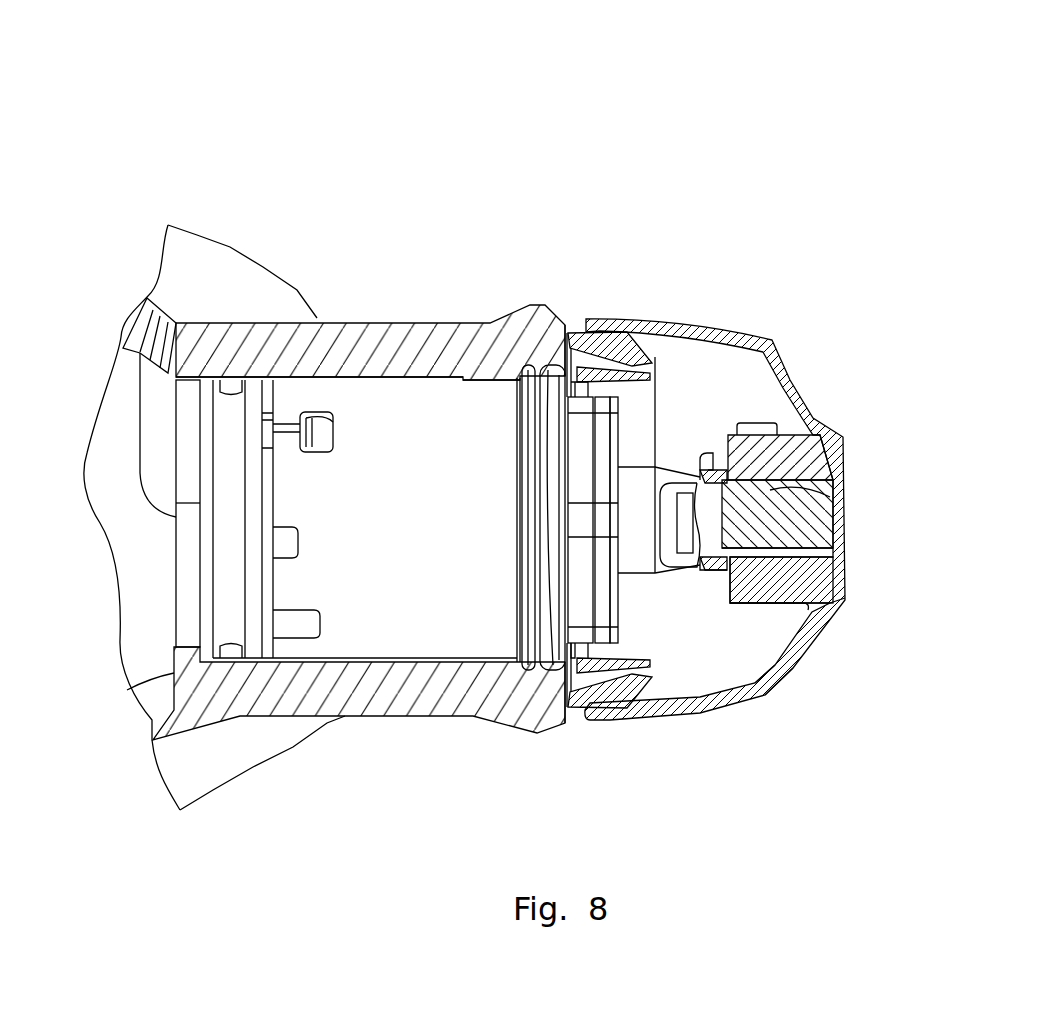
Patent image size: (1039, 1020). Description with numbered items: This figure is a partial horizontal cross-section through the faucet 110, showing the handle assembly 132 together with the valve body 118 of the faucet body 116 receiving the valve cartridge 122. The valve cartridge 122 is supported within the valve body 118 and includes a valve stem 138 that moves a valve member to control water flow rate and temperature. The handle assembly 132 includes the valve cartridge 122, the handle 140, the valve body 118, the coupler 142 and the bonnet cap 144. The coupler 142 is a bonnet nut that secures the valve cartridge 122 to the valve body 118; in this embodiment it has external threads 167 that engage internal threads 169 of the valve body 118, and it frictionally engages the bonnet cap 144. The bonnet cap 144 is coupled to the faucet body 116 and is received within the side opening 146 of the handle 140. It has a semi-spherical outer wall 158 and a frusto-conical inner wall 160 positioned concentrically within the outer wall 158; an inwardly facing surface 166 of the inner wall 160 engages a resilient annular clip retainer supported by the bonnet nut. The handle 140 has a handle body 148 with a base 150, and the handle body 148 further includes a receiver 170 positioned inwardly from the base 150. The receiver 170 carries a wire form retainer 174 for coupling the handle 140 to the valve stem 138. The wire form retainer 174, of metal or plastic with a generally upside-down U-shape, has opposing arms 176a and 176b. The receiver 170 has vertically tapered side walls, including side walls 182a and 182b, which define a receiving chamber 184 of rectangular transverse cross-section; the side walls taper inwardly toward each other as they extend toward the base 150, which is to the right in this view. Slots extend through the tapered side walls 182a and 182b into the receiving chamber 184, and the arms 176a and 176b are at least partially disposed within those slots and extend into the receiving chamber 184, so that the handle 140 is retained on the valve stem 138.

The faucet 110 is at (379, 137).
The faucet body 116 is at (360, 312).
The valve body 118 is at (437, 716).
The valve cartridge 122 is at (385, 667).
The handle assembly 132 is at (900, 425).
The valve stem 138 is at (840, 548).
The handle 140 is at (785, 362).
The coupler 142 is at (597, 707).
The bonnet cap 144 is at (633, 317).
The side opening 146 is at (572, 315).
The handle body 148 is at (800, 650).
The base 150 is at (840, 603).
The outer wall 158 is at (650, 365).
The inner wall 160 is at (622, 378).
The inwardly facing surface 166 is at (712, 440).
The external threads 167 is at (545, 440).
The internal threads 169 is at (547, 667).
The receiver 170 is at (767, 607).
The wire form retainer 174 is at (712, 566).
The arm 176a is at (757, 423).
The arm 176b is at (722, 562).
The tapered side wall 182a is at (838, 427).
The tapered side wall 182b is at (800, 550).
The receiving chamber 184 is at (832, 490).